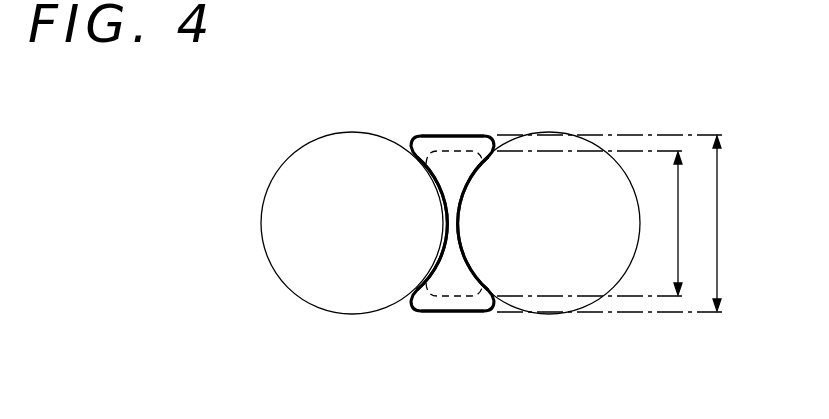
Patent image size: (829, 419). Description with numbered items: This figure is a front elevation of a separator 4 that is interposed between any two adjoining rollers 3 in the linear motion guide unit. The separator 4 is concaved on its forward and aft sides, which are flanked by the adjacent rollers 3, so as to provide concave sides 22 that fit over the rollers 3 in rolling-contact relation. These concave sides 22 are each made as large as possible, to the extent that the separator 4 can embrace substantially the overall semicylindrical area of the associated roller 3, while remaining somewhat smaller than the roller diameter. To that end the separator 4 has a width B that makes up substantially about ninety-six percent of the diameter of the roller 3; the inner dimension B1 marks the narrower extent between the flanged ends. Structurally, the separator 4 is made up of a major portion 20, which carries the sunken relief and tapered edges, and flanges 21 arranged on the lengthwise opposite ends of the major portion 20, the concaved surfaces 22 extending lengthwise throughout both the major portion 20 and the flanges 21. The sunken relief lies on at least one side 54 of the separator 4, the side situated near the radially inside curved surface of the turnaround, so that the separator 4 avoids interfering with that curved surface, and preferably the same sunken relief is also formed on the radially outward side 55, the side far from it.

The roller 3 is at (290, 185).
The separator 4 is at (479, 137).
The major portion 20 is at (453, 190).
The flange 21 is at (447, 150).
The concave side 22 is at (443, 243).
The side 54 is at (468, 313).
The radially outward side 55 is at (460, 150).
The core width B1 is at (595, 223).
The width B is at (612, 223).